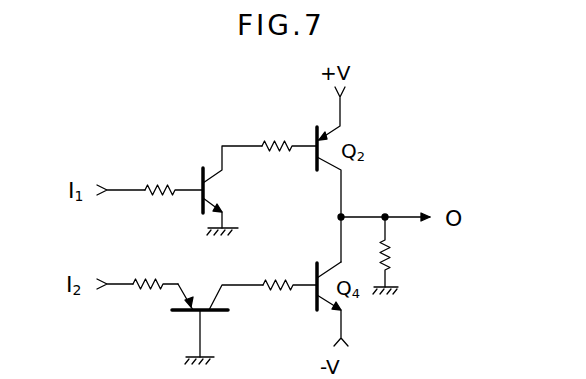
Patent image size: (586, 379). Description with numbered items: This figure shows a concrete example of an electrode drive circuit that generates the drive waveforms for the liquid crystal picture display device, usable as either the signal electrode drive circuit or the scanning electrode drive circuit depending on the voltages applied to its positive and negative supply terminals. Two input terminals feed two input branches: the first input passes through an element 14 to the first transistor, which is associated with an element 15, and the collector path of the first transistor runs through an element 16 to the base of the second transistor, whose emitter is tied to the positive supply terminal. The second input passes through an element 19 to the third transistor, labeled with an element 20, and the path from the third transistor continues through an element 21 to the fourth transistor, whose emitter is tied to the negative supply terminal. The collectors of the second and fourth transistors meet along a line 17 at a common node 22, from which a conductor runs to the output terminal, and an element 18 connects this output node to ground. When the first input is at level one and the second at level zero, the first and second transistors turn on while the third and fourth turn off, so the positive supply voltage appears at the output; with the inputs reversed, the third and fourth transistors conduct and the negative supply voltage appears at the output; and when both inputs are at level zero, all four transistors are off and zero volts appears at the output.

The resistor 14 is at (160, 178).
The transistor Q1 15 is at (219, 192).
The resistor 16 is at (276, 141).
The collector wire of Q2 17 is at (320, 187).
The resistor 18 is at (396, 264).
The resistor 19 is at (147, 278).
The transistor Q3 20 is at (181, 313).
The resistor 21 is at (276, 296).
The output node 22 is at (321, 238).